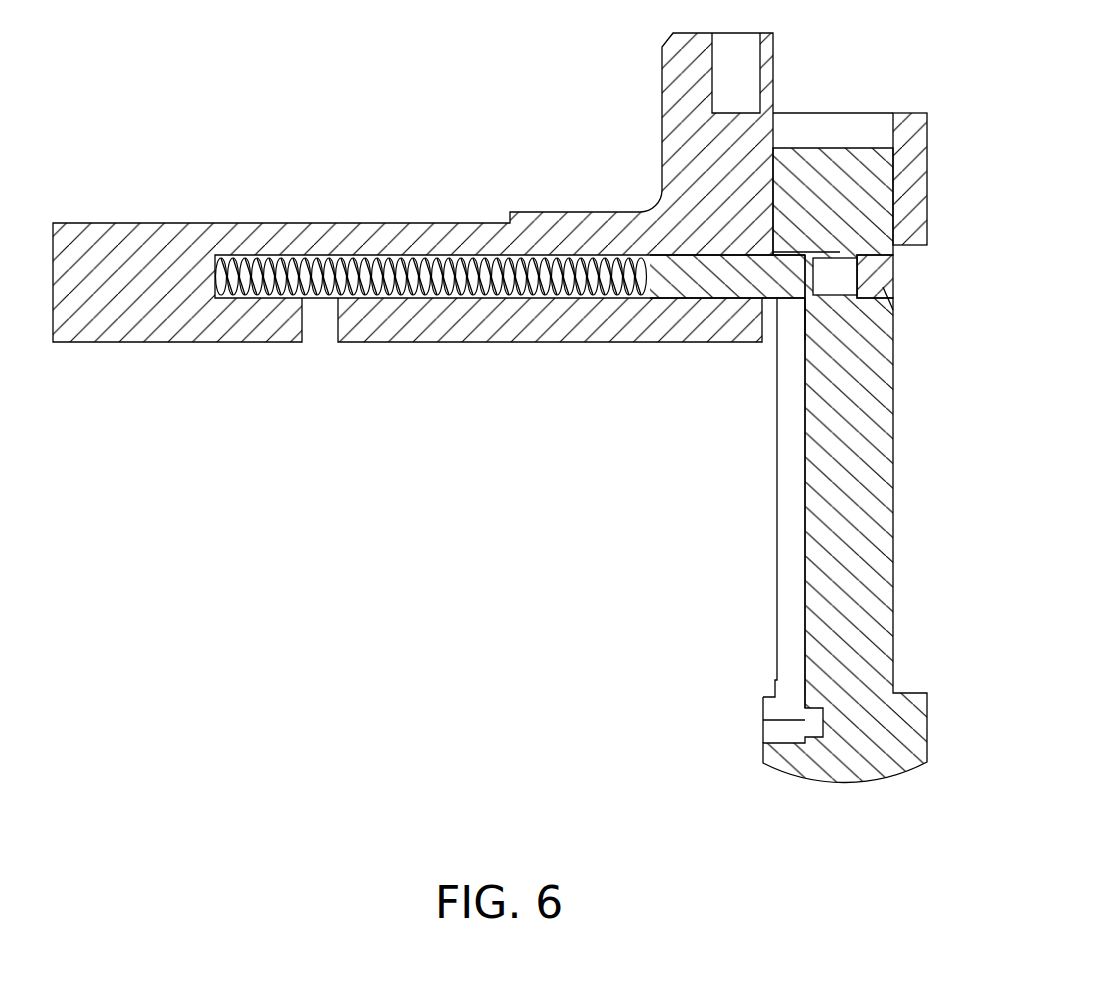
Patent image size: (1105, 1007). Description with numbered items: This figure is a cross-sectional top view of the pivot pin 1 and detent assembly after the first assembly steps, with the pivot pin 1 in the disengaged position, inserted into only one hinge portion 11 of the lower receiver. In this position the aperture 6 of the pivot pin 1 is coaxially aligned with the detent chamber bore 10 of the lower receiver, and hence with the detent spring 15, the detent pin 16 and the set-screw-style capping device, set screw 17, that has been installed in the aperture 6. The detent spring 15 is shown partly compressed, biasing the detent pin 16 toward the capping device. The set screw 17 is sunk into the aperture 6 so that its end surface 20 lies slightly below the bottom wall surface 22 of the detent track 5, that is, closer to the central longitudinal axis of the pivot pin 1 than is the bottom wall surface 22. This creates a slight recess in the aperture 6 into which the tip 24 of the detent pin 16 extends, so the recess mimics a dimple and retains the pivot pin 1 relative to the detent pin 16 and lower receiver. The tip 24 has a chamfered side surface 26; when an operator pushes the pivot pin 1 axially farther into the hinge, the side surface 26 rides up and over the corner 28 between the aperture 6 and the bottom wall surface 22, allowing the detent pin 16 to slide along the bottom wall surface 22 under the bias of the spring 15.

The pivot pin 1 is at (934, 574).
The detent track 5 is at (785, 452).
The aperture 6 is at (835, 262).
The detent chamber bore 10 is at (368, 223).
The hinge portion 11 is at (905, 155).
The detent spring 15 is at (388, 300).
The detent pin 16 is at (735, 273).
The set screw 17 is at (883, 287).
The end surface 20 is at (800, 258).
The bottom wall surface 22 is at (803, 515).
The tip 24 is at (805, 277).
The chamfered side surface 26 is at (802, 296).
The corner 28 is at (808, 298).